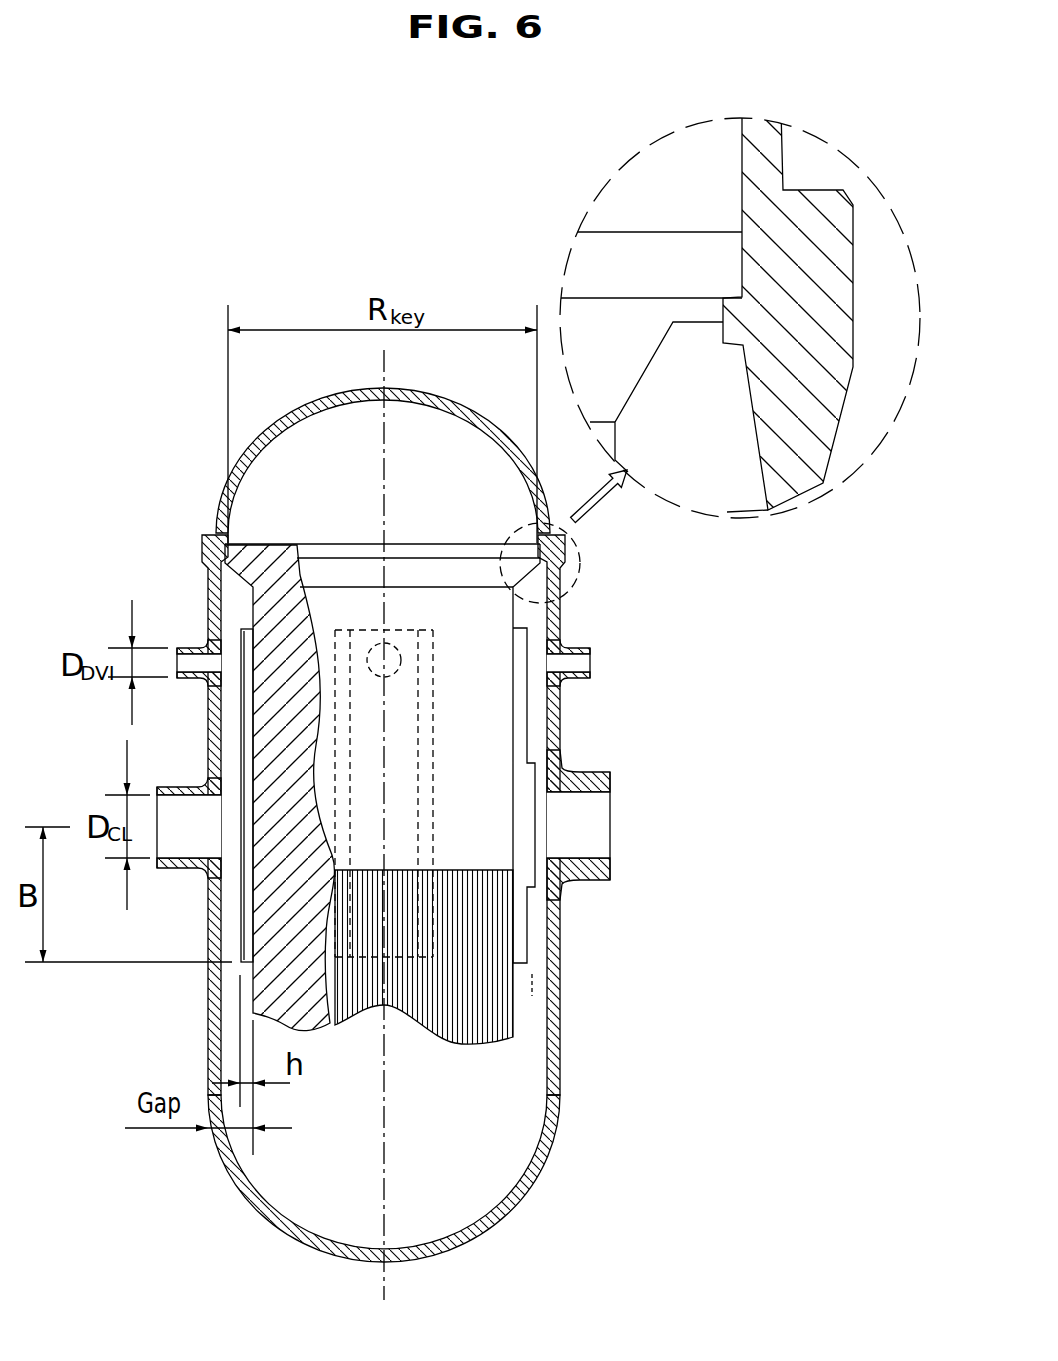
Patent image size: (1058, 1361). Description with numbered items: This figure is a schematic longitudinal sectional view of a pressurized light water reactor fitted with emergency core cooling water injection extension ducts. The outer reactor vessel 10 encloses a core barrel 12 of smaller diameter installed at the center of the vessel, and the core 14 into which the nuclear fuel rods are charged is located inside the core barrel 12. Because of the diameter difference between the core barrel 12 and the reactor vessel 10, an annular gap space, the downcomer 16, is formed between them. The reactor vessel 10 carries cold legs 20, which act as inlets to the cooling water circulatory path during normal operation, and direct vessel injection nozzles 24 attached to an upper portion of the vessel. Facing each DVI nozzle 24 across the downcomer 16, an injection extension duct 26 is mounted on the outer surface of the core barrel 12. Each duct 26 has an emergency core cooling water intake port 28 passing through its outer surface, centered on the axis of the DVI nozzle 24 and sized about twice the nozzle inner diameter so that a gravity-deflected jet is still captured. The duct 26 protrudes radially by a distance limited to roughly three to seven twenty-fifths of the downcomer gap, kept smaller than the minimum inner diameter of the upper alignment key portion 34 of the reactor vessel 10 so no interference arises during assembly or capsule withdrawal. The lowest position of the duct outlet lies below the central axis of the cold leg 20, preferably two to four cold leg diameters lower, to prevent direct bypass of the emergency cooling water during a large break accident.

The reactor vessel 10 is at (206, 1048).
The core barrel 12 is at (515, 1012).
The core 14 is at (500, 940).
The downcomer 16 is at (537, 985).
The cold leg 20 is at (162, 787).
The direct vessel injection nozzle 24 is at (182, 648).
The injection extension duct 26 is at (240, 716).
The emergency core cooling water intake port 28 is at (235, 652).
The upper alignment key portion 34 is at (718, 346).